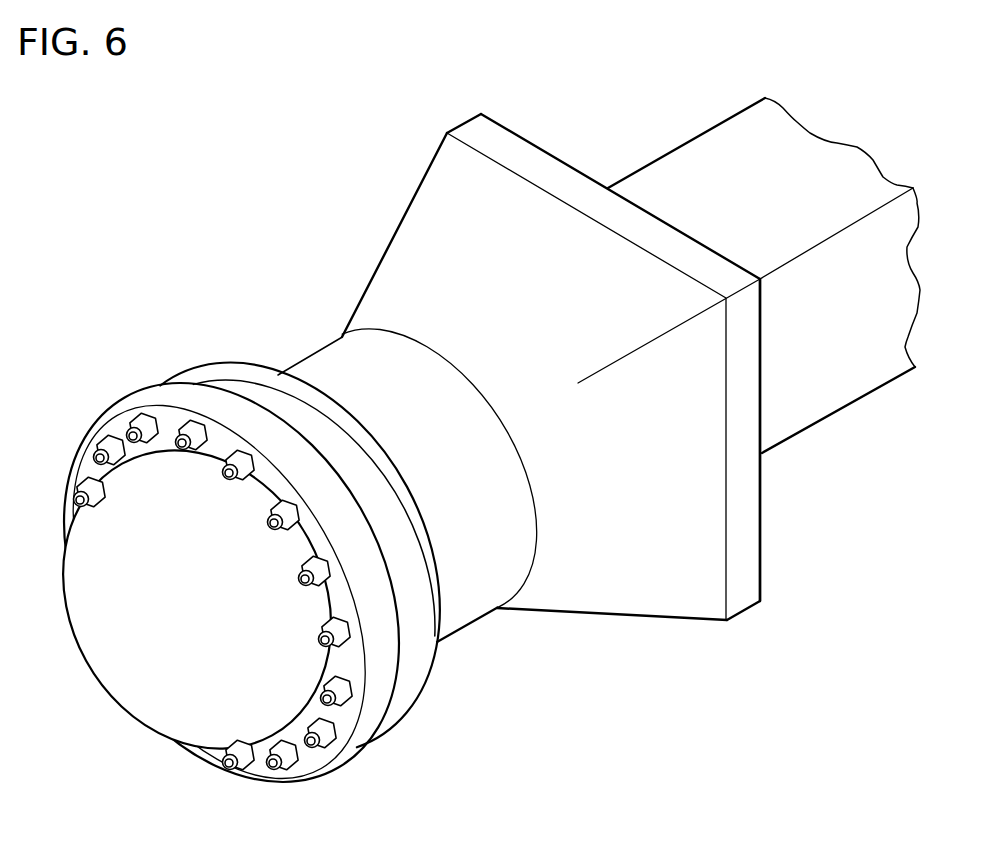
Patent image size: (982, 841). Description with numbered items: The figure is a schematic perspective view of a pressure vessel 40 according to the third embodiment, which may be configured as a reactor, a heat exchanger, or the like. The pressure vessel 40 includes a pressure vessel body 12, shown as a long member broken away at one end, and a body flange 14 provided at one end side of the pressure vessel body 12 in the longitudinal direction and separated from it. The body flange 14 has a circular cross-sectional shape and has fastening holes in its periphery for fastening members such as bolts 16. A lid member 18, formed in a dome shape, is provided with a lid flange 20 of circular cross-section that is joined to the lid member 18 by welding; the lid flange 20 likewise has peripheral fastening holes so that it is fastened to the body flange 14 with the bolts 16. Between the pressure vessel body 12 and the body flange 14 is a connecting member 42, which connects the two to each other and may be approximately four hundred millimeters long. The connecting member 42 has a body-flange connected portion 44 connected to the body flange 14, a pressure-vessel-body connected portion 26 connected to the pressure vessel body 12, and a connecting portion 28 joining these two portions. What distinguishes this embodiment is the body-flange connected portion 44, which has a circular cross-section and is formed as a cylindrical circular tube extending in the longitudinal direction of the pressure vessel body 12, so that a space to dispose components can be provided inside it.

The pressure vessel body 12 is at (700, 157).
The body flange 14 is at (231, 377).
The bolts 16 is at (97, 428).
The lid member 18 is at (75, 600).
The lid flange 20 is at (172, 392).
The pressure-vessel-body connected portion 26 is at (740, 565).
The connecting portion 28 is at (650, 592).
The pressure vessel 40 is at (277, 197).
The connecting member 42 is at (763, 517).
The body-flange connected portion 44 is at (473, 607).